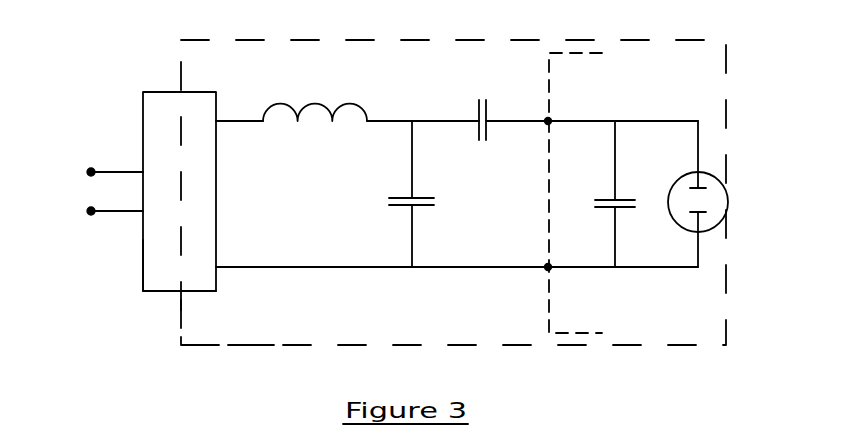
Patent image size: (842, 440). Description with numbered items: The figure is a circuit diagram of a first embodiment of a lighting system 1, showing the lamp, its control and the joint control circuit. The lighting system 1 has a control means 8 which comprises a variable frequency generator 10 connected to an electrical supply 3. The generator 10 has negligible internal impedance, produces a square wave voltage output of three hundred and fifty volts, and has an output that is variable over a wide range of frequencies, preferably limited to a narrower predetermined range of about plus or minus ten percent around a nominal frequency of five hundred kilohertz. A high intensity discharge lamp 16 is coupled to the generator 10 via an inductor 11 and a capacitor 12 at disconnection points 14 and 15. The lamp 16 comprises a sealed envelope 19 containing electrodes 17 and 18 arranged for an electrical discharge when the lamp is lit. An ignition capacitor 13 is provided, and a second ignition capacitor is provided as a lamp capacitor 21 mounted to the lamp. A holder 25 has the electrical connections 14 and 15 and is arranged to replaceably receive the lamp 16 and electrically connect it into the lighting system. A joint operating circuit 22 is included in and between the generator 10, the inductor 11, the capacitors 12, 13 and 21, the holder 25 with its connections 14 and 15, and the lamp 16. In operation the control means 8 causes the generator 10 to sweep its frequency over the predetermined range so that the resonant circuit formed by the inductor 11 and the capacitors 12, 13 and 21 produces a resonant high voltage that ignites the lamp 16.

The lighting system 1 is at (219, 20).
The electrical supply 3 is at (100, 191).
The control means 8 is at (160, 274).
The variable frequency generator 10 is at (158, 106).
The inductor 11 is at (294, 119).
The capacitor 12 is at (477, 131).
The ignition capacitor 13 is at (387, 194).
The disconnection point 14 is at (551, 119).
The disconnection point 15 is at (549, 269).
The high intensity discharge lamp 16 is at (731, 198).
The electrode 17 is at (704, 189).
The electrode 18 is at (704, 210).
The sealed envelope 19 is at (726, 192).
The lamp capacitor 21 is at (600, 201).
The joint operating circuit 22 is at (253, 348).
The holder 25 is at (546, 306).